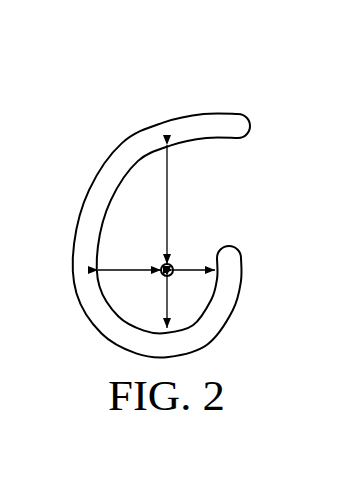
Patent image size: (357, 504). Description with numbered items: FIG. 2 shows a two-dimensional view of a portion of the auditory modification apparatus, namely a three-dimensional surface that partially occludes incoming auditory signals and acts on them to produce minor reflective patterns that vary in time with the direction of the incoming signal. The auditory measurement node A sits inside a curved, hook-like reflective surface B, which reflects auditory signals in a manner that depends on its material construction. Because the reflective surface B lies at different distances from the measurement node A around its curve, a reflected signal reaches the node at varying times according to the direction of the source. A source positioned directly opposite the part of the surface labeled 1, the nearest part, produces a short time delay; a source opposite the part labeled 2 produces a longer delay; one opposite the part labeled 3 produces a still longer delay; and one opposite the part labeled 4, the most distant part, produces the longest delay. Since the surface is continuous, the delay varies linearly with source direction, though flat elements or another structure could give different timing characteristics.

The part of the surface 1 is at (194, 255).
The part of the surface 2 is at (157, 302).
The part of the surface 3 is at (129, 255).
The part of the surface 4 is at (175, 204).
The auditory measurement node A is at (173, 263).
The reflective surface B is at (210, 110).